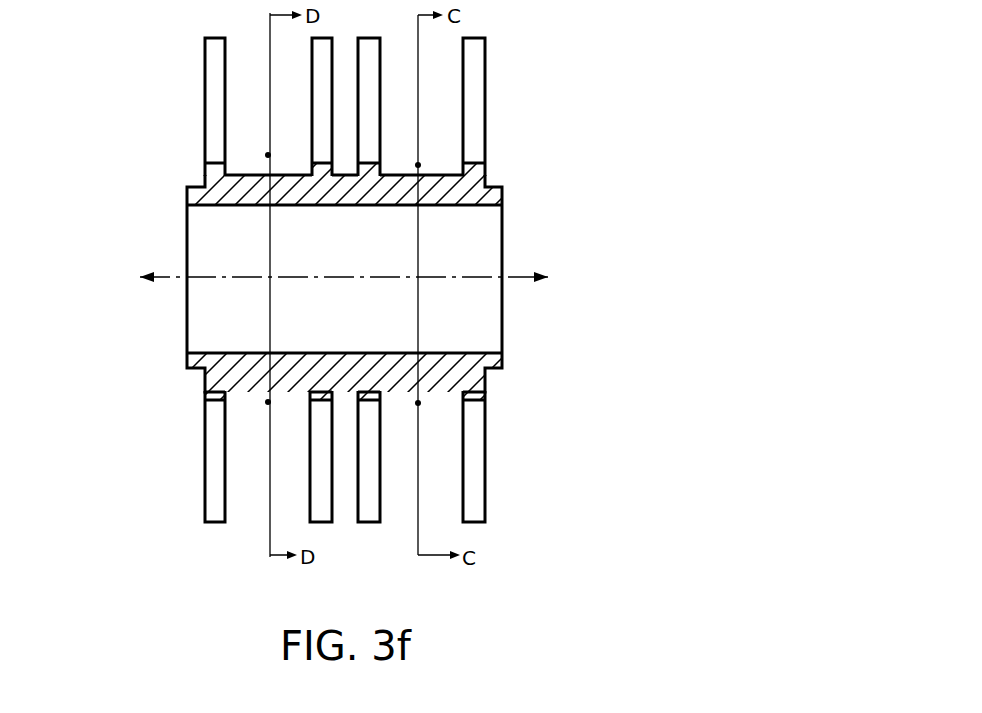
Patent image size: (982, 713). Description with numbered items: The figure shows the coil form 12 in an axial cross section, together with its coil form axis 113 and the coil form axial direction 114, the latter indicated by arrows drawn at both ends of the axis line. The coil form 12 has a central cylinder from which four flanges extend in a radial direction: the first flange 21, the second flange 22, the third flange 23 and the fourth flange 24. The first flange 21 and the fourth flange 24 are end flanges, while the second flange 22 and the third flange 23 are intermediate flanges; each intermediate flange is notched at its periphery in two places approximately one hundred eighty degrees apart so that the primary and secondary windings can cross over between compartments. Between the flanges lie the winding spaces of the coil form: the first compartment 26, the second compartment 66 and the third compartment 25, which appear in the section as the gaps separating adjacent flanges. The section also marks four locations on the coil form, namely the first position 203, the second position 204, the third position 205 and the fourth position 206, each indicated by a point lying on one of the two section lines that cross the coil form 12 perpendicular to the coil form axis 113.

The coil form 12 is at (502, 188).
The first flange 21 is at (475, 437).
The second flange 22 is at (368, 507).
The third flange 23 is at (322, 507).
The fourth flange 24 is at (210, 507).
The third compartment 25 is at (243, 440).
The first compartment 26 is at (450, 462).
The second compartment 66 is at (342, 497).
The coil form axis 113 is at (513, 275).
The coil form axial direction 114 is at (142, 270).
The first position 203 is at (418, 403).
The second position 204 is at (418, 165).
The third position 205 is at (268, 155).
The fourth position 206 is at (268, 402).